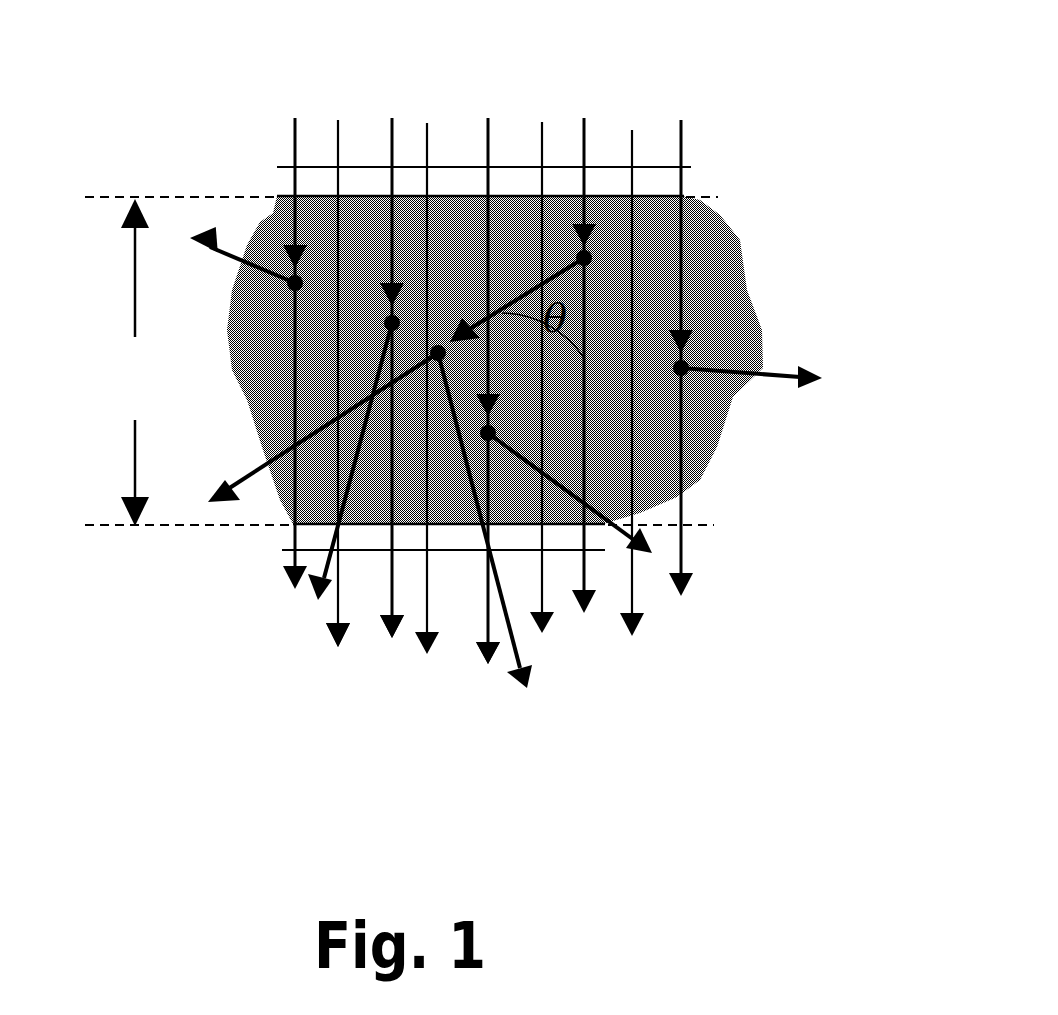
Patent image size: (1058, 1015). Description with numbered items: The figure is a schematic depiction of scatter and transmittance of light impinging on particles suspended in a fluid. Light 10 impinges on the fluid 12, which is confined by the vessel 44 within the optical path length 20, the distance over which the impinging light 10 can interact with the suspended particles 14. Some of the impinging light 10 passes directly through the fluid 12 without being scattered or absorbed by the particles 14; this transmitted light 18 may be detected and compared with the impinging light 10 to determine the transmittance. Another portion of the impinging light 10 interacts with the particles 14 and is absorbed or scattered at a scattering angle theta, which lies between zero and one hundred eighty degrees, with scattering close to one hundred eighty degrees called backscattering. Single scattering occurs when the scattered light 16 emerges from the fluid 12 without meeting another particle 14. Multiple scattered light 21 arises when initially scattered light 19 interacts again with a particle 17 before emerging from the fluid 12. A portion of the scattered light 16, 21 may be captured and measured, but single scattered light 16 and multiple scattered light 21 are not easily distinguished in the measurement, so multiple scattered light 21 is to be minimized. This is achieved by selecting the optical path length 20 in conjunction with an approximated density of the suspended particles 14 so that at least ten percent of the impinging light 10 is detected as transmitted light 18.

The impinging light 10 is at (585, 125).
The fluid 12 is at (715, 253).
The particles 14 is at (686, 364).
The scattered light 16 is at (225, 253).
The particle 17 is at (447, 360).
The transmitted light 18 is at (483, 628).
The initially scattered light 19 is at (455, 335).
The optical path length 20 is at (131, 362).
The multiple scattered light 21 is at (243, 485).
The vessel 44 is at (448, 182).